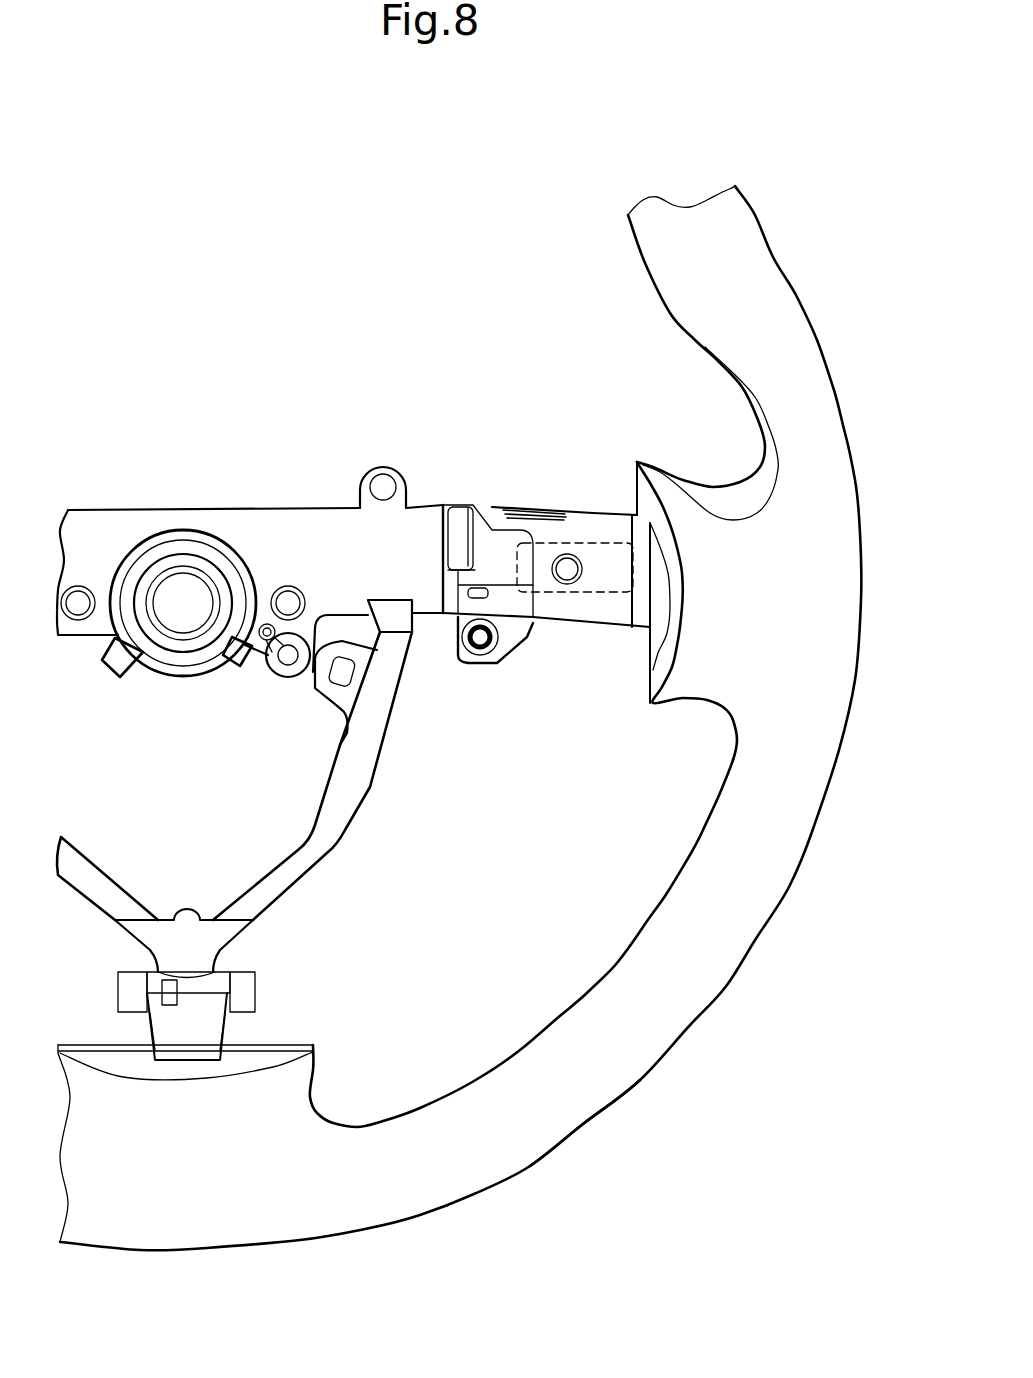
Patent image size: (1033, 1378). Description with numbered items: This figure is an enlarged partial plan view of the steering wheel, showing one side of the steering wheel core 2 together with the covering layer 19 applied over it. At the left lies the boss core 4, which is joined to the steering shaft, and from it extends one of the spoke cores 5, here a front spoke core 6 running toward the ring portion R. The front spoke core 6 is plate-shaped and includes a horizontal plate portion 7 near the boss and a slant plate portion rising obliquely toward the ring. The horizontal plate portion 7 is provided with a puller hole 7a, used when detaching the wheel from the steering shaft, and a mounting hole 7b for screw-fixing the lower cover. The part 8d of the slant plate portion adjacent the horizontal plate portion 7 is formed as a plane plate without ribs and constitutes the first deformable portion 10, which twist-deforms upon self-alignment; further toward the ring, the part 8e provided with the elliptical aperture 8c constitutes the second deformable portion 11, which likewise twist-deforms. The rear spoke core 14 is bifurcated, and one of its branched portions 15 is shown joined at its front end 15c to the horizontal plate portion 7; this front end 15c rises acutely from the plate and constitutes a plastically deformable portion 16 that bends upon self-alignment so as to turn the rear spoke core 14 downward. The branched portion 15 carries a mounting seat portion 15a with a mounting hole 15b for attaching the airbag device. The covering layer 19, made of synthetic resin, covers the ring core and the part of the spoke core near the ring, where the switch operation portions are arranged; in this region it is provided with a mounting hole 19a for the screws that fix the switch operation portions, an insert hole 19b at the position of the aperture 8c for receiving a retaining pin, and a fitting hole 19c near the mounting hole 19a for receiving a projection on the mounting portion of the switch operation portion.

The steering wheel core 2 is at (335, 544).
The boss core 4 is at (183, 678).
The spoke core 5 is at (383, 811).
The front spoke core 6 is at (493, 781).
The horizontal plate portion 7 is at (325, 508).
The puller hole 7a is at (288, 586).
The mounting hole 7b is at (383, 486).
The elliptical aperture 8c is at (627, 601).
The part of slant plate portion 8d is at (476, 492).
The part of slant plate portion 8e is at (608, 675).
The first deformable portion 10 is at (460, 538).
The second deformable portion 11 is at (610, 592).
The rear spoke core 14 is at (380, 794).
The branched portion 15 is at (257, 776).
The mounting seat portion 15a is at (318, 690).
The mounting hole 15b is at (312, 698).
The front end of branched portion 15c is at (433, 471).
The plastically deformable portion 16 is at (390, 616).
The covering layer 19 is at (460, 718).
The mounting hole 19a is at (508, 713).
The insert hole 19b is at (567, 584).
The fitting hole 19c is at (484, 586).
The ring portion R is at (572, 1126).